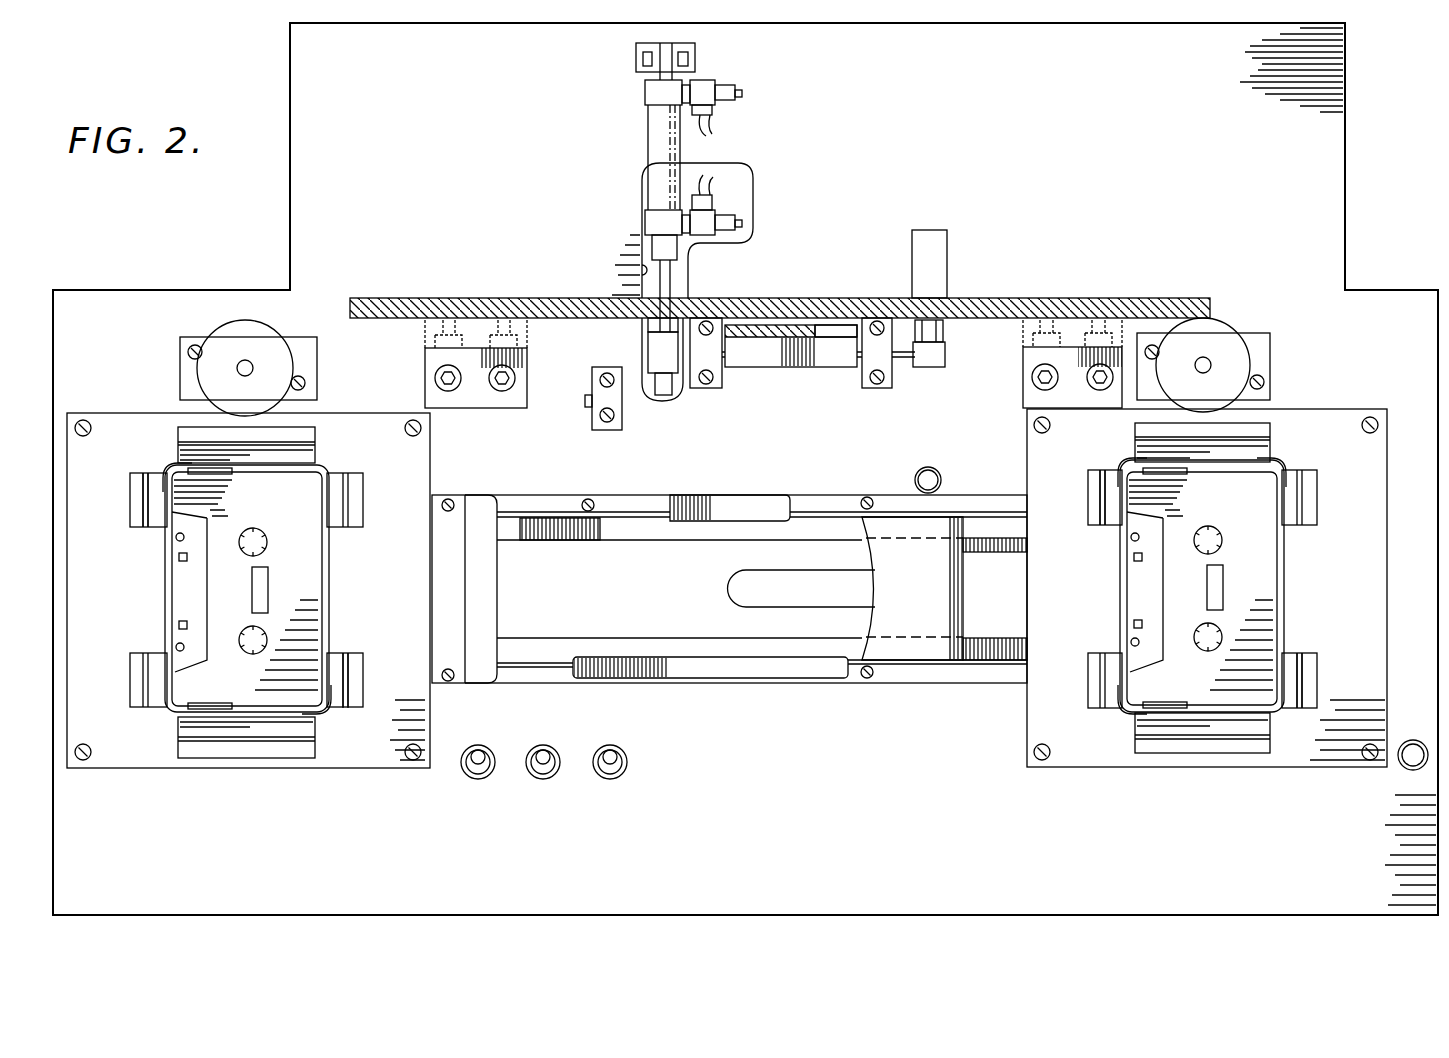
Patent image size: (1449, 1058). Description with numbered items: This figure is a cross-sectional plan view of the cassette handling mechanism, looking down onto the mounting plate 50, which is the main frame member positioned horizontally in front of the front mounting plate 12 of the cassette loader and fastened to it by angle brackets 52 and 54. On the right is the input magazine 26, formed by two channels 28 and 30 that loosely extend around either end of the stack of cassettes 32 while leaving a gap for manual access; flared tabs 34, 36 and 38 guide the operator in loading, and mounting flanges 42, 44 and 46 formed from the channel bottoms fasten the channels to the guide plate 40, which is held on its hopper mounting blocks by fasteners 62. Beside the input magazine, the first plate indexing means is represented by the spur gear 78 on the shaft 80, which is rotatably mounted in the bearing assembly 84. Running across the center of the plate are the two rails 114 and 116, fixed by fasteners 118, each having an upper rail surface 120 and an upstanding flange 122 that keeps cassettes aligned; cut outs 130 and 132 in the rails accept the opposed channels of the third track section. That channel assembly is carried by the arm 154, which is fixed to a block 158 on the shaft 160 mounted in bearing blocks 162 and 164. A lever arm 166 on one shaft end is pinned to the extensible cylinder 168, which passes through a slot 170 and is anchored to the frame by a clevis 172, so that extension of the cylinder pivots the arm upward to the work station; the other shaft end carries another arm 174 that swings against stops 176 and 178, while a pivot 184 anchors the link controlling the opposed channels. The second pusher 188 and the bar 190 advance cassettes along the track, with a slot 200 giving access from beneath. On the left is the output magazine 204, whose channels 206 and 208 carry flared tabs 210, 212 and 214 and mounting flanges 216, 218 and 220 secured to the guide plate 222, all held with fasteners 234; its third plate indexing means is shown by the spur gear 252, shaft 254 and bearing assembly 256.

The front mounting plate 12 is at (1015, 300).
The input magazine 26 is at (1285, 465).
The channel 28 is at (1120, 467).
The channel 30 is at (1107, 710).
The stack of cassettes 32 is at (1258, 577).
The flared tab 34 is at (1305, 498).
The flared tab 36 is at (1255, 433).
The flared tab 38 is at (1103, 509).
The guide plate 40 is at (1373, 540).
The mounting flange 42 is at (1317, 515).
The mounting flange 44 is at (1270, 432).
The mounting flange 46 is at (1135, 436).
The mounting plate 50 is at (1333, 153).
The angle bracket 52 is at (528, 362).
The angle bracket 54 is at (1022, 380).
The fastener 62 is at (1372, 748).
The spur gear 78 is at (1215, 318).
The shaft 80 is at (1208, 360).
The bearing assembly 84 is at (1272, 358).
The rail 114 is at (805, 497).
The rail 116 is at (918, 683).
The fastener 118 is at (868, 497).
The upper rail surface 120 is at (592, 535).
The upstanding flange 122 is at (548, 497).
The cut out 130 is at (790, 665).
The cut out 132 is at (713, 497).
The arm 154 is at (832, 325).
The block 158 is at (770, 330).
The shaft 160 is at (904, 368).
The bearing block 162 is at (706, 318).
The bearing block 164 is at (877, 318).
The lever arm 166 is at (662, 400).
The extensible cylinder 168 is at (647, 140).
The slot 170 is at (640, 270).
The clevis 172 is at (695, 55).
The arm 174 is at (945, 358).
The stop 176 is at (947, 242).
The stop 178 is at (942, 477).
The pivot 184 is at (592, 402).
The second pusher 188 is at (962, 572).
The bar 190 is at (1005, 602).
The slot 200 is at (752, 605).
The output magazine 204 is at (332, 466).
The channel 206 is at (170, 466).
The channel 208 is at (322, 708).
The flared tab 210 is at (337, 520).
The flared tab 212 is at (300, 452).
The flared tab 214 is at (150, 527).
The mounting flange 216 is at (358, 508).
The mounting flange 218 is at (300, 430).
The mounting flange 220 is at (130, 503).
The guide plate 222 is at (385, 767).
The fastener 234 is at (413, 760).
The spur gear 252 is at (280, 336).
The shaft 254 is at (242, 364).
The bearing assembly 256 is at (308, 352).